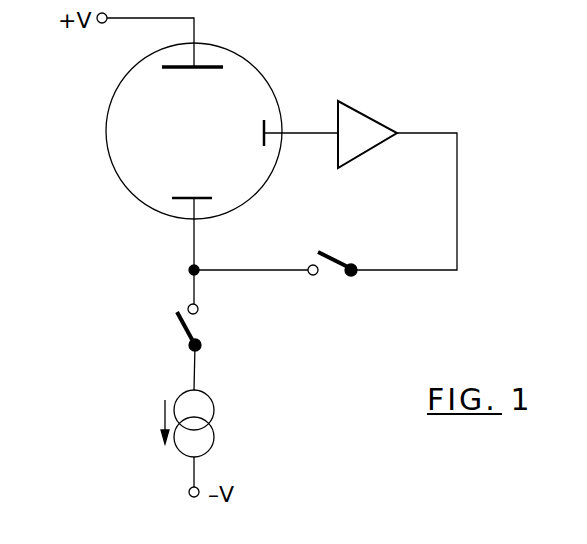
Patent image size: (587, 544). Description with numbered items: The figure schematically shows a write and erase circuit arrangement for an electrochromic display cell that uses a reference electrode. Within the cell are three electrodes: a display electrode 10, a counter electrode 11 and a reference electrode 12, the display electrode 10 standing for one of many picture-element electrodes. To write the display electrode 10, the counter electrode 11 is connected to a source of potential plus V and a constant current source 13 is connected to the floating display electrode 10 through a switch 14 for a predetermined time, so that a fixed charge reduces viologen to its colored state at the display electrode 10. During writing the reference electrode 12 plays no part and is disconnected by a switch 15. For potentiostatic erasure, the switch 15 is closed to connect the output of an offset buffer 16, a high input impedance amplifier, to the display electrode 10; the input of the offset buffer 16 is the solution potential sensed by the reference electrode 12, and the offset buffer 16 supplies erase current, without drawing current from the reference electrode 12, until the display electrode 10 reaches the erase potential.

The display electrode 10 is at (189, 196).
The counter electrode 11 is at (174, 70).
The reference electrode 12 is at (262, 131).
The constant current source 13 is at (216, 414).
The switch 14 is at (181, 330).
The switch 15 is at (335, 254).
The offset buffer 16 is at (366, 150).